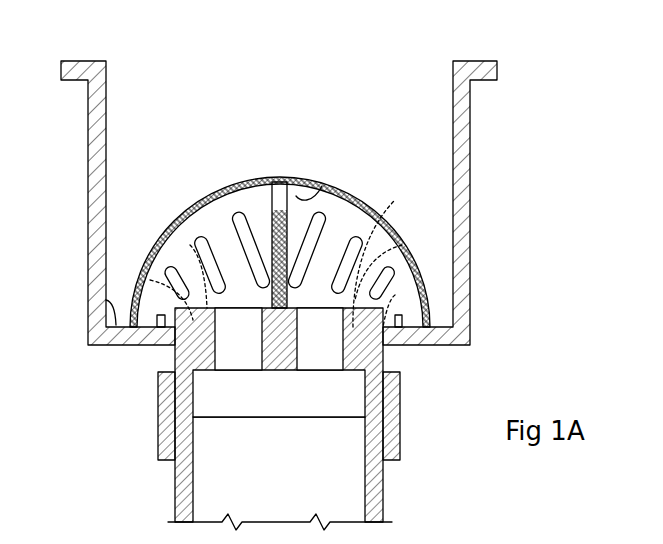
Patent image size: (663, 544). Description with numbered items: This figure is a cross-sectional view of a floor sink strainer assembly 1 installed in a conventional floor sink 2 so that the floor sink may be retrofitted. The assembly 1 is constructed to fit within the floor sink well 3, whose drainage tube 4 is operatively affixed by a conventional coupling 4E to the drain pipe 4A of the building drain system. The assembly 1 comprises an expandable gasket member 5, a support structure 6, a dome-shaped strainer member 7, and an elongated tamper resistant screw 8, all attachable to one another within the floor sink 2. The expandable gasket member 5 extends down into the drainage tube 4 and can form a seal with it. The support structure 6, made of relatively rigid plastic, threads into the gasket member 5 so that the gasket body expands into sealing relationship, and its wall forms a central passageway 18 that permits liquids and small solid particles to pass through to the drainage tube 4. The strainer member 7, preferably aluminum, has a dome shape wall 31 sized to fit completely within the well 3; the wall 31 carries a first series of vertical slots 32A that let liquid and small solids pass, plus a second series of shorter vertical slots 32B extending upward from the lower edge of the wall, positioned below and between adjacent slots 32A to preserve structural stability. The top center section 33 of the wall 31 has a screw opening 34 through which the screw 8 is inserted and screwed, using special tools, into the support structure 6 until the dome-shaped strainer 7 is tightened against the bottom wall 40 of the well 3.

The floor sink strainer assembly 1 is at (287, 189).
The floor sink 2 is at (287, 203).
The floor sink well 3 is at (90, 243).
The drainage tube 4 is at (278, 419).
The drain pipe 4A is at (385, 498).
The coupling 4E is at (158, 415).
The expandable gasket member 5 is at (150, 280).
The support structure 6 is at (190, 245).
The dome-shaped strainer member 7 is at (329, 238).
The elongated tamper resistant screw 8 is at (290, 181).
The central passageway 18 is at (250, 348).
The dome shape wall 31 is at (188, 210).
The first series of vertical slots 32A is at (372, 205).
The second series of vertical slots 32B is at (402, 321).
The top center section 33 is at (322, 186).
The screw opening 34 is at (313, 210).
The bottom wall 40 is at (106, 300).